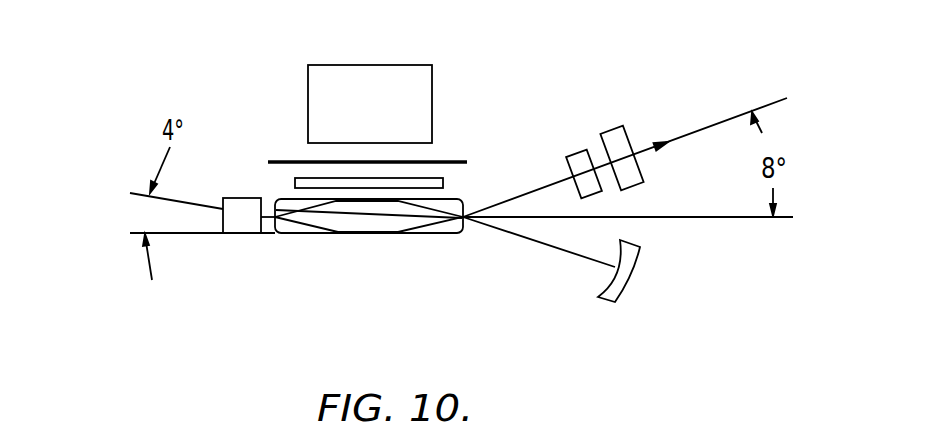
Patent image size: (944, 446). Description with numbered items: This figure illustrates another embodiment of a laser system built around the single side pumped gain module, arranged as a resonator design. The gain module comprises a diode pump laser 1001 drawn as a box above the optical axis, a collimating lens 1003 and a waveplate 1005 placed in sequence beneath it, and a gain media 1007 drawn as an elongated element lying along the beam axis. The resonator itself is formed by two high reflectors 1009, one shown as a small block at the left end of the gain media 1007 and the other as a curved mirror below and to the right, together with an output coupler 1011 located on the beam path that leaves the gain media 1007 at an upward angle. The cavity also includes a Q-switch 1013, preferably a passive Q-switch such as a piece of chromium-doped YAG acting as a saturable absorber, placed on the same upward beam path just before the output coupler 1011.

The diode pump laser 1001 is at (423, 93).
The collimating lens 1003 is at (297, 160).
The waveplate 1005 is at (433, 177).
The gain media 1007 is at (343, 233).
The high reflectors 1009 is at (237, 198).
The output coupler 1011 is at (610, 130).
The Q-switch 1013 is at (569, 160).